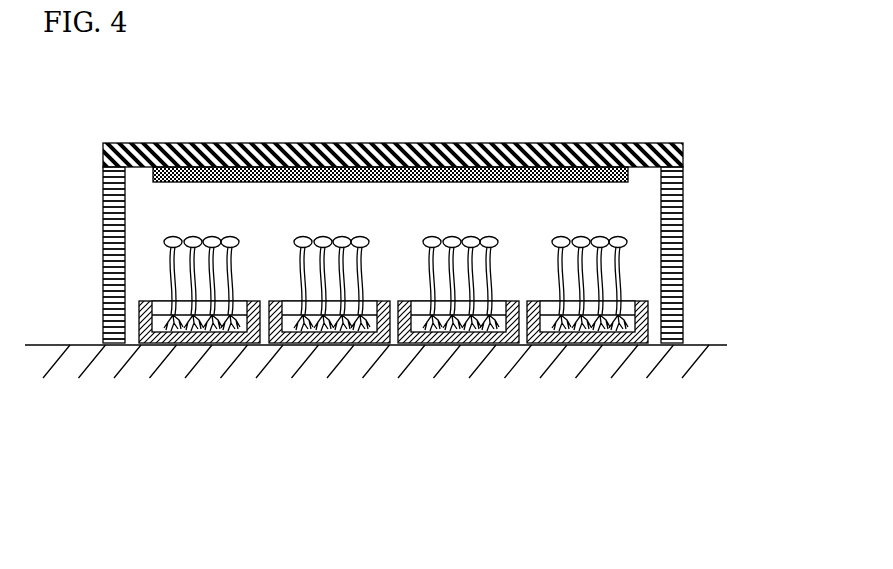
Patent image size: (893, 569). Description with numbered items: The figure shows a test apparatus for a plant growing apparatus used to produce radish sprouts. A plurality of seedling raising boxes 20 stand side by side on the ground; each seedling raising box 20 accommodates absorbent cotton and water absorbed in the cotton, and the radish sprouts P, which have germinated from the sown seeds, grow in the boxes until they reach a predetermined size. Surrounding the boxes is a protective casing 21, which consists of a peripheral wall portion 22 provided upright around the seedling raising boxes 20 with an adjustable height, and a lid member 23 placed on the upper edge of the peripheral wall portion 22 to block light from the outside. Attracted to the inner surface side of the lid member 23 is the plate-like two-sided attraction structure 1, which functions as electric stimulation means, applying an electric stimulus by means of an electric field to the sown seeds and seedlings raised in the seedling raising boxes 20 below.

The two-sided attraction structure 1 is at (487, 181).
The seedling raising box 20 is at (141, 328).
The protective casing 21 is at (451, 208).
The peripheral wall portion 22 is at (672, 228).
The lid member 23 is at (562, 142).
The radish sprouts P is at (181, 238).